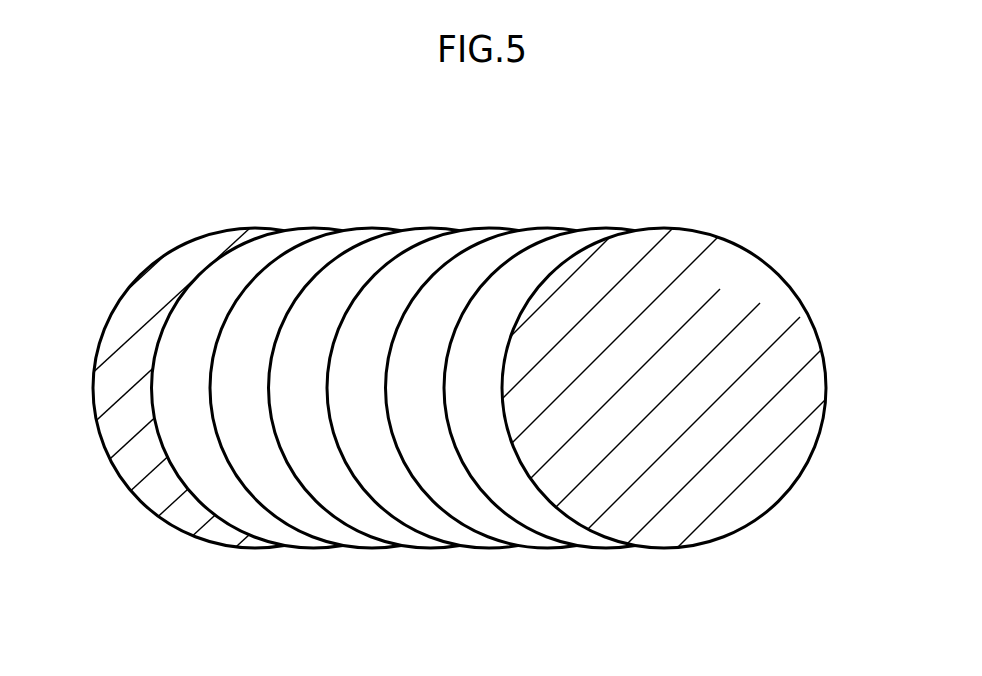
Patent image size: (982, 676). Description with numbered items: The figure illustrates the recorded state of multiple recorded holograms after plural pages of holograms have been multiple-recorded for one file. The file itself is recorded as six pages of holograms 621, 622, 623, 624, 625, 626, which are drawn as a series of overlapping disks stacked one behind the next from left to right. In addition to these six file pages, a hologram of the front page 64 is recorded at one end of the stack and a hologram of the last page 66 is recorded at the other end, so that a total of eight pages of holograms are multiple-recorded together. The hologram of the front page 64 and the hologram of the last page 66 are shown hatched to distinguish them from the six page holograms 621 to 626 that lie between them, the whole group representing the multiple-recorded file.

The hologram of the first page 621 is at (275, 247).
The hologram of the second page 622 is at (336, 248).
The hologram of the third page 623 is at (385, 525).
The hologram of the fourth page 624 is at (450, 525).
The hologram of the fifth page 625 is at (502, 248).
The hologram of the sixth page 626 is at (565, 248).
The hologram of the front page 64 is at (125, 370).
The hologram of the last page 66 is at (812, 368).